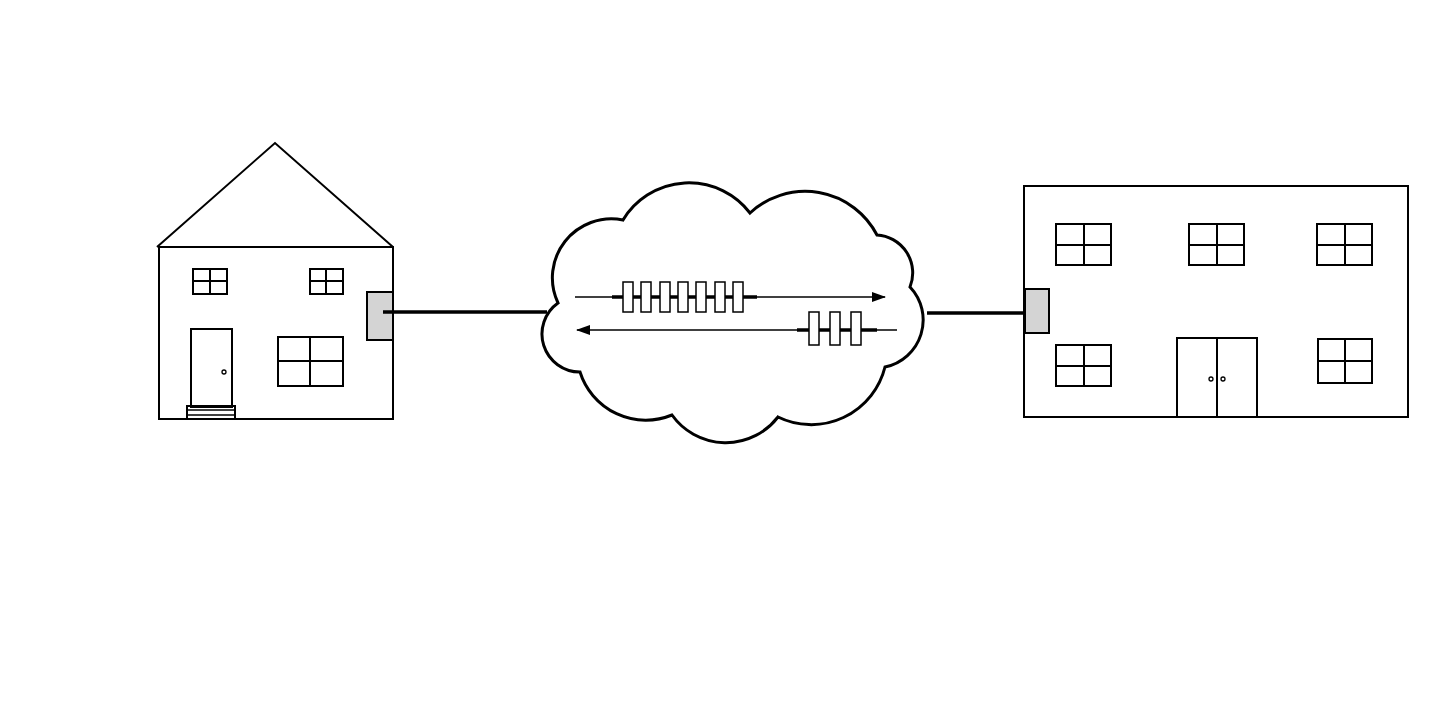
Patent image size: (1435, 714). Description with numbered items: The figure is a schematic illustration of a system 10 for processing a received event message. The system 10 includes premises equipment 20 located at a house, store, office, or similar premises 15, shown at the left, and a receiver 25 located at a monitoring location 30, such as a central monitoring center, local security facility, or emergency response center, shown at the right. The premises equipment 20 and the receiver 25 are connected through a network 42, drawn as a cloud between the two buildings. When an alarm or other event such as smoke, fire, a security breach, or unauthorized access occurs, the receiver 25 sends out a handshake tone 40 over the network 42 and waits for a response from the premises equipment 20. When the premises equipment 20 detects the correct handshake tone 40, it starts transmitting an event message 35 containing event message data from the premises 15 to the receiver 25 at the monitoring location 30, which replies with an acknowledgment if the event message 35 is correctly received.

The system 10 is at (694, 110).
The premises 15 is at (358, 200).
The premises equipment 20 is at (385, 302).
The receiver 25 is at (1030, 298).
The monitoring location 30 is at (1042, 168).
The event message 35 is at (687, 270).
The handshake tone 40 is at (807, 340).
The network 42 is at (657, 422).